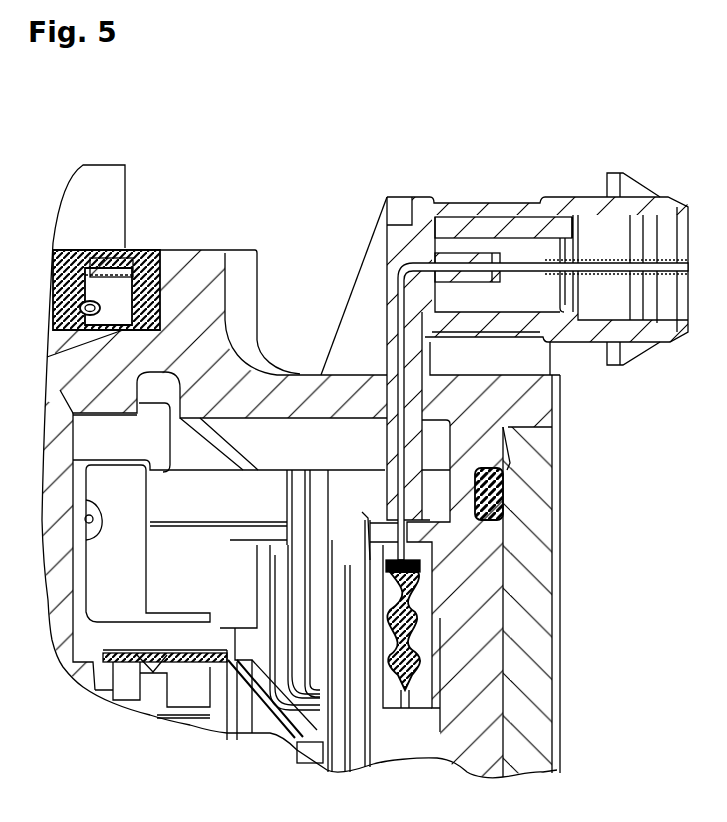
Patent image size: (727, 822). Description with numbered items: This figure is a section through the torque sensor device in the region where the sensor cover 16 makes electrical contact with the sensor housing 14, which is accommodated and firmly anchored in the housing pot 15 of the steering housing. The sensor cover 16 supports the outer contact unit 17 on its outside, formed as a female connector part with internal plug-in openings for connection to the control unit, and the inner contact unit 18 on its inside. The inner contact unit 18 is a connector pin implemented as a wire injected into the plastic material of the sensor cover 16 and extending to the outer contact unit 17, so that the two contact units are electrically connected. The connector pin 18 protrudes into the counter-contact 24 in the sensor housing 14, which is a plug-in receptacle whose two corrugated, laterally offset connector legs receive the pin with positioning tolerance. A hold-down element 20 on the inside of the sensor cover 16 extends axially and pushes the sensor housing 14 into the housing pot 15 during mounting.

The sensor housing 14 is at (463, 688).
The housing pot 15 is at (535, 762).
The sensor cover 16 is at (203, 268).
The outer contact unit 17 is at (679, 197).
The inner contact unit 18 is at (407, 535).
The hold-down element 20 is at (190, 585).
The counter-contact 24 is at (428, 607).